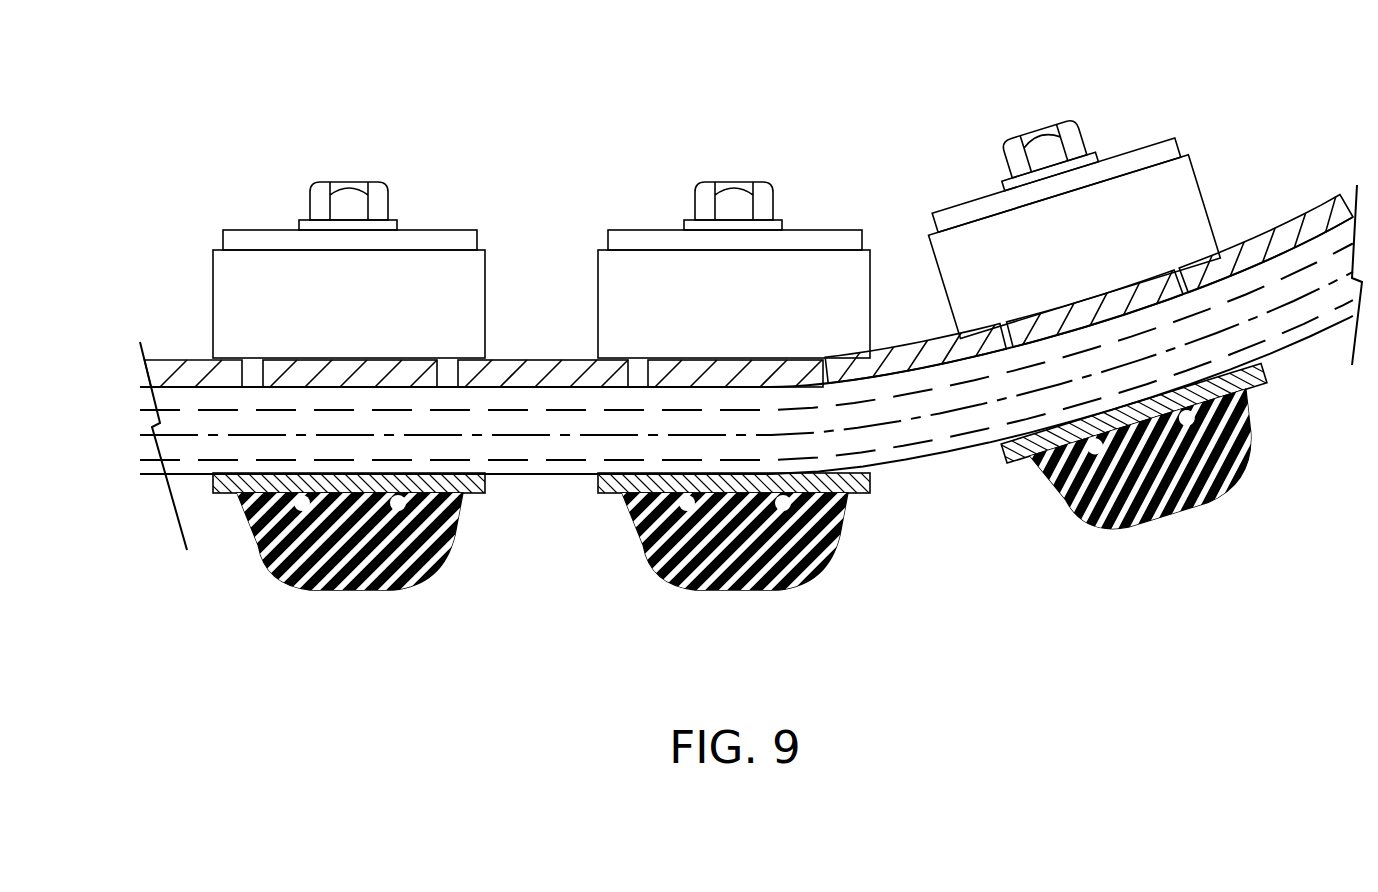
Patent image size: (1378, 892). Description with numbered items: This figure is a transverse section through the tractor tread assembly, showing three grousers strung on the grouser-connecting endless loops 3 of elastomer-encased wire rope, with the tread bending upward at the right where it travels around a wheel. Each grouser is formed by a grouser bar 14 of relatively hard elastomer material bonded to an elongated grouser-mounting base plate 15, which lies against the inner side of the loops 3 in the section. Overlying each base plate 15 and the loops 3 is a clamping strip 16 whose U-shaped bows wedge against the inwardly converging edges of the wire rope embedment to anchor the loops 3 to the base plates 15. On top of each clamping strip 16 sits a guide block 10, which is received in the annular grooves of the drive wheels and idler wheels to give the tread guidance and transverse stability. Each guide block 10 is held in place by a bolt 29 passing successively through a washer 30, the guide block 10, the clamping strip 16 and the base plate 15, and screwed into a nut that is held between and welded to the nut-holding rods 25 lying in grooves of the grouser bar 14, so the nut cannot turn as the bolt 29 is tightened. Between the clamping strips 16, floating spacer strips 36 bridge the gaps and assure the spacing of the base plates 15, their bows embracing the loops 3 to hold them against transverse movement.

The loop 3 is at (548, 457).
The guide block 10 is at (756, 179).
The grouser bar 14 is at (728, 520).
The grouser-mounting base plate 15 is at (235, 485).
The clamping strip 16 is at (716, 256).
The nut-holding rods 25 is at (778, 512).
The bolt 29 is at (353, 197).
The washer 30 is at (417, 243).
The spacer strips 36 is at (177, 372).